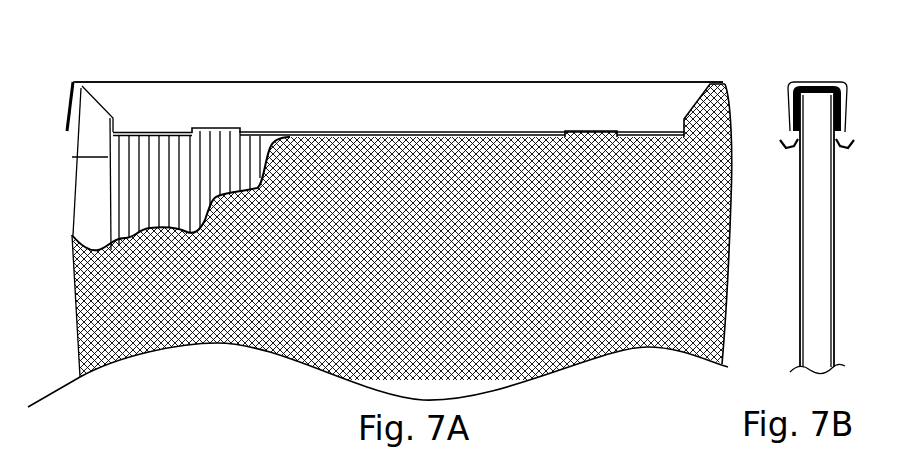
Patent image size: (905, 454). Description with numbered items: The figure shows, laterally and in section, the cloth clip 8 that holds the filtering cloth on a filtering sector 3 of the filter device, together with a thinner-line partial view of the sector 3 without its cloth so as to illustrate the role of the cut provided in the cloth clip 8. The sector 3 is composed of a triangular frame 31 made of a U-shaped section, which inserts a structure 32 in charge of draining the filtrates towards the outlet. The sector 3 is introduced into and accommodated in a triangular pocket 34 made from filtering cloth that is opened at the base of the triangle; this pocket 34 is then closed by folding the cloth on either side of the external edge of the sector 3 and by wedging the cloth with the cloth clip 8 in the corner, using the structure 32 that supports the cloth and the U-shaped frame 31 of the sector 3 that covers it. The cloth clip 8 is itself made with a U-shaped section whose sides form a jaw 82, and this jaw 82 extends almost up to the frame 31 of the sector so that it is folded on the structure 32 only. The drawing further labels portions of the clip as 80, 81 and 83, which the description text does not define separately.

In FIG. 7A, the filtering sector 3 is at (272, 62).
In FIG. 7A, the cloth clip 8 is at (423, 92).
In FIG. 7B, the cloth clip 8 is at (841, 83).
In FIG. 7A, the peripheral flange 80 is at (70, 93).
In FIG. 7A, the shoulder 81 is at (711, 84).
In FIG. 7A, the jaw 82 is at (527, 130).
In FIG. 7B, the jaw 82 is at (791, 150).
In FIG. 7A, the protrusion 83 is at (607, 130).
In FIG. 7A, the triangular frame 31 is at (83, 140).
In FIG. 7B, the triangular frame 31 is at (827, 82).
In FIG. 7A, the structure 32 is at (132, 203).
In FIG. 7B, the structure 32 is at (807, 327).
In FIG. 7A, the triangular pocket 34 is at (78, 320).
In FIG. 7B, the triangular pocket 34 is at (798, 215).